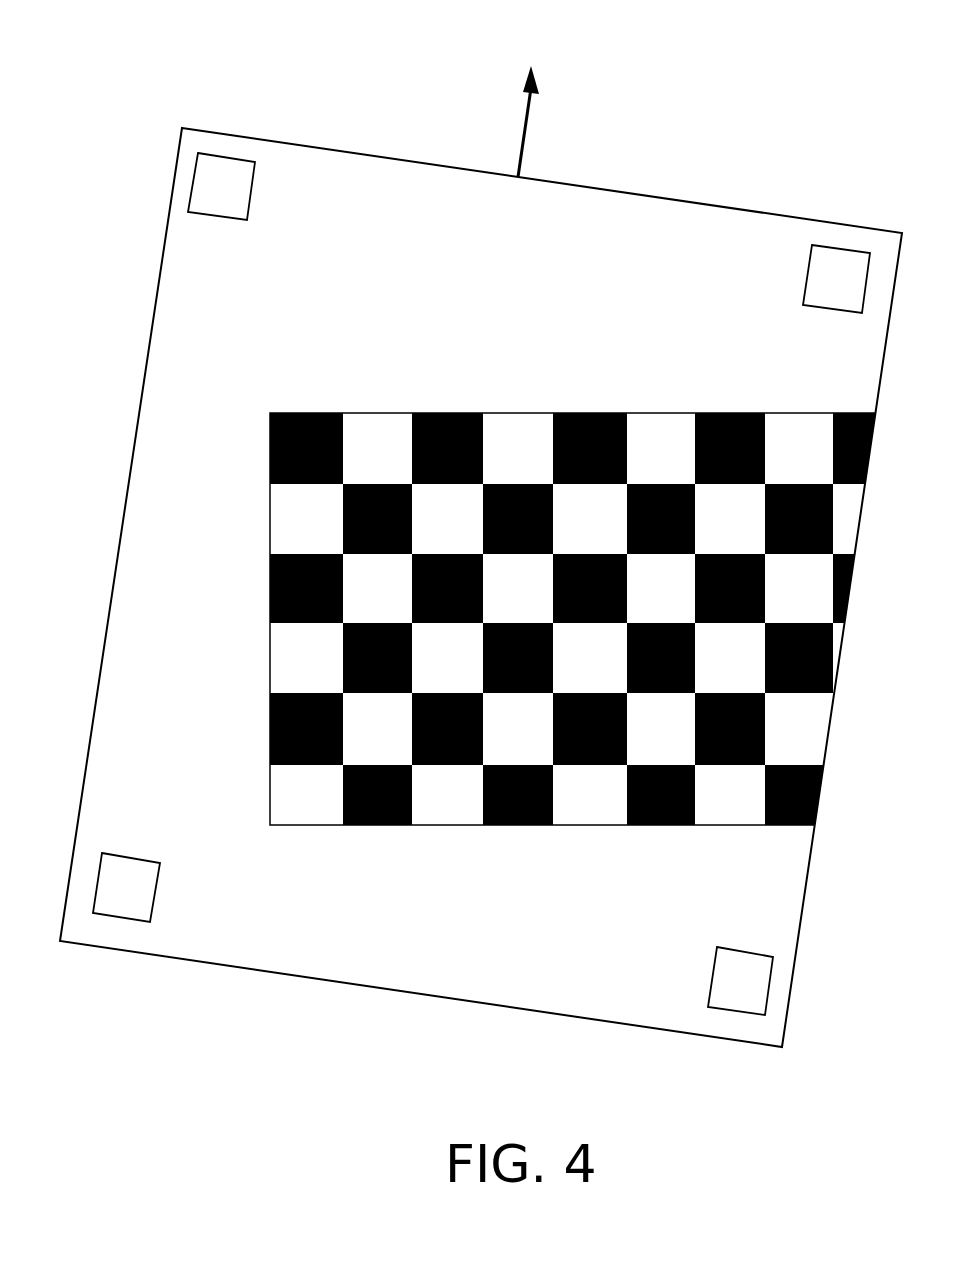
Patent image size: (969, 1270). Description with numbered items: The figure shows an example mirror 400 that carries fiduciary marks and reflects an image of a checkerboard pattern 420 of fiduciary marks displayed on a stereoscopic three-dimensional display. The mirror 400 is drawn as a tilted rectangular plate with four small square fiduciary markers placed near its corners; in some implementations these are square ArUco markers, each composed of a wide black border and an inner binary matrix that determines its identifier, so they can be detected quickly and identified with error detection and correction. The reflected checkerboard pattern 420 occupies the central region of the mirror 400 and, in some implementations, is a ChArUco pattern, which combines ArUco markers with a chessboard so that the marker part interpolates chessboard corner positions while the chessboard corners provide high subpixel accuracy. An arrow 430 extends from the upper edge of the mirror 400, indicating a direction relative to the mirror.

The mirror 400 is at (89, 66).
The checkerboard pattern 420 is at (432, 409).
The orientation arrow 430 is at (517, 134).